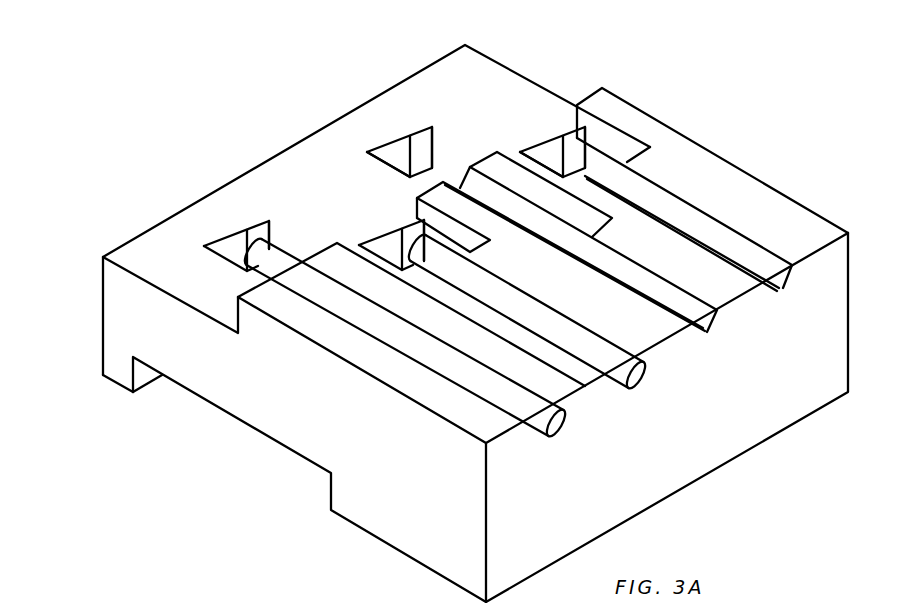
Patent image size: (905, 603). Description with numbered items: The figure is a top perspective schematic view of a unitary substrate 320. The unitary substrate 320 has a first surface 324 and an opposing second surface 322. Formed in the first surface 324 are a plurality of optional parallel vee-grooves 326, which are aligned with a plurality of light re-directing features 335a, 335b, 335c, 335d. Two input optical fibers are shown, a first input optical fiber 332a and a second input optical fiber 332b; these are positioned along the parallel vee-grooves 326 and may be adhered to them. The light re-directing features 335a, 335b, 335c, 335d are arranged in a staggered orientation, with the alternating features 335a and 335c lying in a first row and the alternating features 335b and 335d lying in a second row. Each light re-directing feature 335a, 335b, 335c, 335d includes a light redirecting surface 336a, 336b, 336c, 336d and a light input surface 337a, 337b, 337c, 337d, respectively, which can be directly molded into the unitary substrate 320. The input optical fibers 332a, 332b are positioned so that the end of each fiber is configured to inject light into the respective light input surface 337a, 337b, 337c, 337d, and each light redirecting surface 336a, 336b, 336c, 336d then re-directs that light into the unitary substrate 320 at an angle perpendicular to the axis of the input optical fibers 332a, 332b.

The unitary substrate 320 is at (113, 284).
The second surface 322 is at (390, 547).
The first surface 324 is at (688, 152).
The parallel vee-grooves 326 is at (717, 223).
The first input optical fiber 332a is at (377, 317).
The second input optical fiber 332b is at (497, 297).
The light re-directing feature 335a is at (210, 260).
The light re-directing feature 335b is at (360, 237).
The light re-directing feature 335c is at (424, 115).
The light re-directing feature 335d is at (570, 124).
The light redirecting surface 336a is at (230, 238).
The light redirecting surface 336b is at (388, 234).
The light redirecting surface 336c is at (400, 139).
The light redirecting surface 336d is at (550, 140).
The light input surface 337a is at (270, 222).
The light input surface 337b is at (427, 230).
The light input surface 337c is at (430, 148).
The light input surface 337d is at (582, 148).